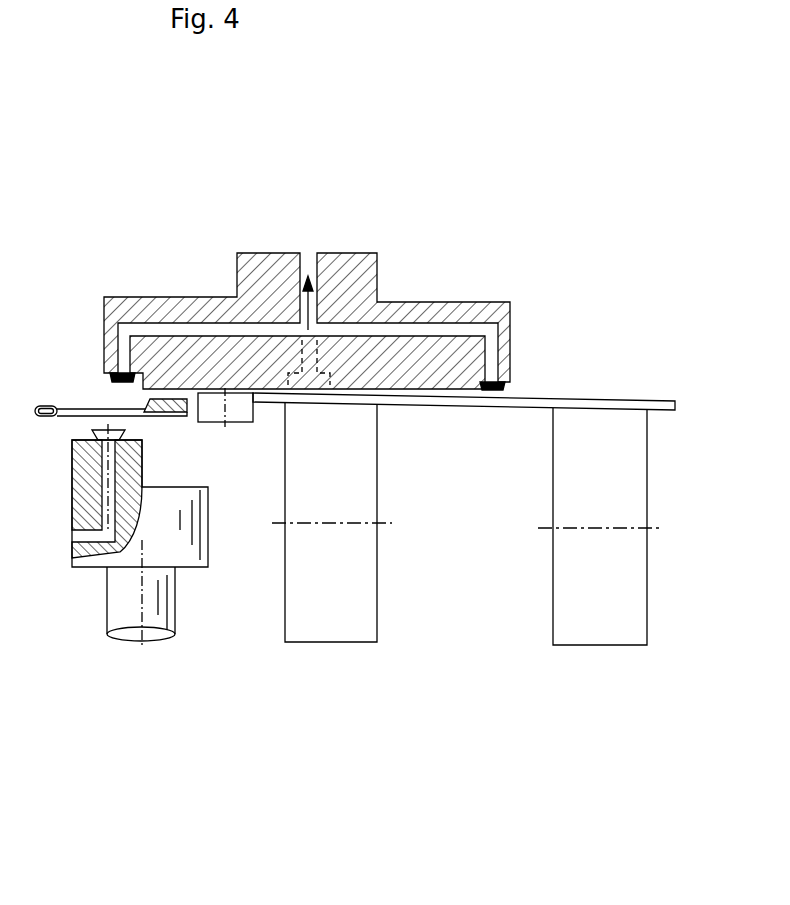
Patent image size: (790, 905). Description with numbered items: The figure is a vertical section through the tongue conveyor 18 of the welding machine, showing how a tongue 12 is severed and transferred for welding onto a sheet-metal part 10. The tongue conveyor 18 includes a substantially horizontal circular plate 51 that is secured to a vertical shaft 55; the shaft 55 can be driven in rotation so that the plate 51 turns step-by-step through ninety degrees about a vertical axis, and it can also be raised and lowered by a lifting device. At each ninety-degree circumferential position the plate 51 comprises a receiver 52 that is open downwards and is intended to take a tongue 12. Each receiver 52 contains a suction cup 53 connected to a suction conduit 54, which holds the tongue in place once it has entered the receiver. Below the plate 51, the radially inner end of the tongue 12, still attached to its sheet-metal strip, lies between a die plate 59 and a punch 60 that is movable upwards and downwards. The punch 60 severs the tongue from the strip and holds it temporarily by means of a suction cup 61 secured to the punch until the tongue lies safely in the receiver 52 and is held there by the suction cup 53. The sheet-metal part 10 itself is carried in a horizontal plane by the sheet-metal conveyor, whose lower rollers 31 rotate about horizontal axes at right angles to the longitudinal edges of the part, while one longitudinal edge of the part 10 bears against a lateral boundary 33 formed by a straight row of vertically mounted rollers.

The sheet-metal part 10 is at (478, 402).
The tongue 12 is at (70, 408).
The tongue conveyor 18 is at (355, 302).
The lower rollers 31 is at (570, 607).
The lateral boundary 33 is at (237, 416).
The circular plate 51 is at (179, 308).
The receiver 52 is at (512, 384).
The suction cup 53 is at (503, 389).
The suction conduit 54 is at (423, 333).
The vertical shaft 55 is at (343, 262).
The die plate 59 is at (165, 413).
The punch 60 is at (170, 557).
The suction cup 61 is at (91, 432).